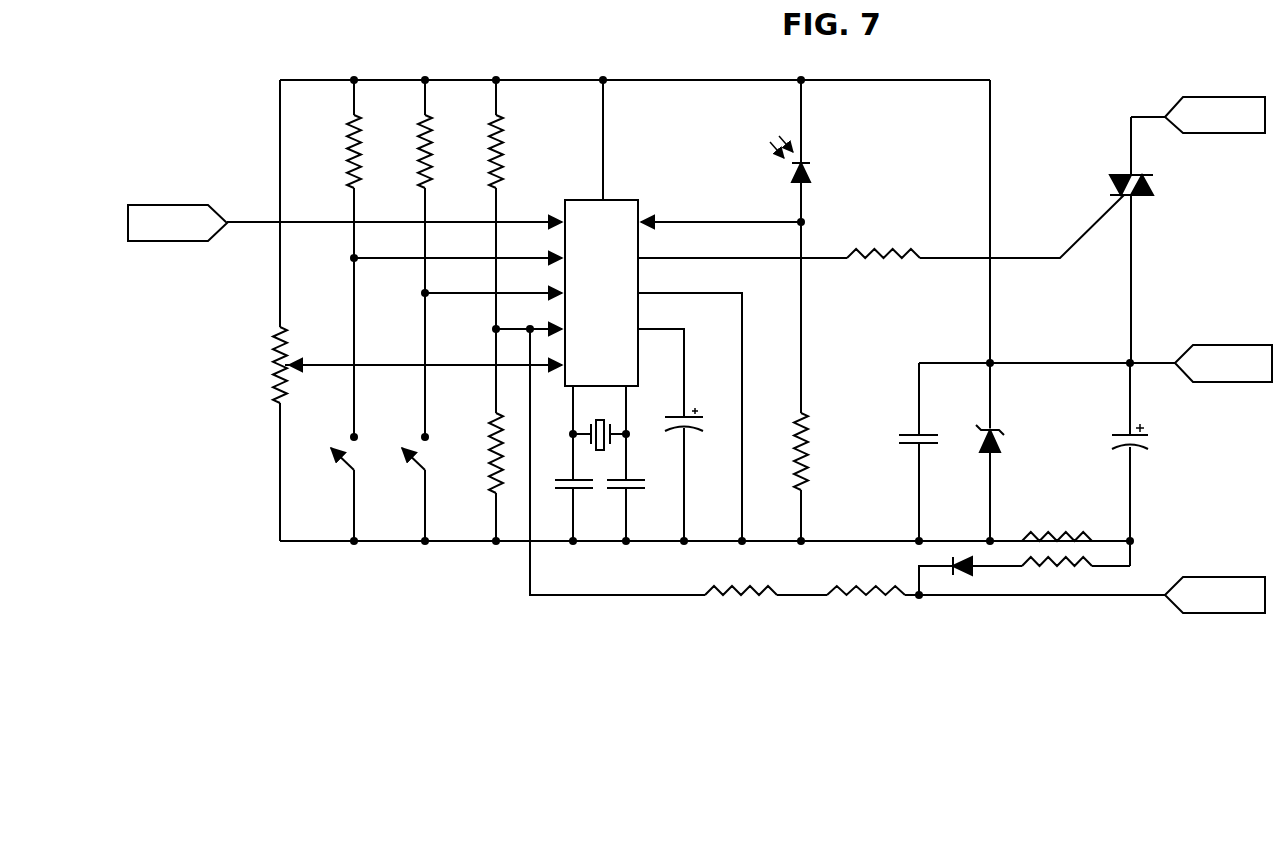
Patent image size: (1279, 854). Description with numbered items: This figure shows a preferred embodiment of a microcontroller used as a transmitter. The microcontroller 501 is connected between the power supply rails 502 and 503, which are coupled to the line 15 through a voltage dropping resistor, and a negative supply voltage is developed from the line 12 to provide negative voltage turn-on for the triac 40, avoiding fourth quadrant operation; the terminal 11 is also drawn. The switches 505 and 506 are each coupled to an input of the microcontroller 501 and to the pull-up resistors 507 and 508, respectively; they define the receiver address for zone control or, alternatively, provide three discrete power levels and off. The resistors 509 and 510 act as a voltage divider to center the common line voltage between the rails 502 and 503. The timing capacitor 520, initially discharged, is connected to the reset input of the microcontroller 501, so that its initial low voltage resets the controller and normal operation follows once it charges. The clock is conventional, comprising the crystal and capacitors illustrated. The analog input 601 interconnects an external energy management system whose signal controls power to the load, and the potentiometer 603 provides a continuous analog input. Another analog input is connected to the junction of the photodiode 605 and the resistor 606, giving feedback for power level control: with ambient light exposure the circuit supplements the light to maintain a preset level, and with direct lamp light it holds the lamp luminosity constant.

The microcontroller 501 is at (640, 214).
The power supply rail 502 is at (936, 81).
The power supply rail 503 is at (877, 540).
The switch 505 is at (343, 464).
The switch 506 is at (414, 464).
The pull-up resistor 507 is at (366, 172).
The pull-up resistor 508 is at (437, 172).
The resistor 509 is at (509, 172).
The resistor 510 is at (490, 438).
The timing capacitor 520 is at (704, 424).
The analog input 601 is at (345, 223).
The potentiometer 603 is at (272, 380).
The photodiode 605 is at (817, 168).
The resistor 606 is at (812, 450).
The triac 40 is at (1152, 184).
The line 15 is at (1198, 115).
The terminal 11 is at (1095, 363).
The line 12 is at (1215, 595).